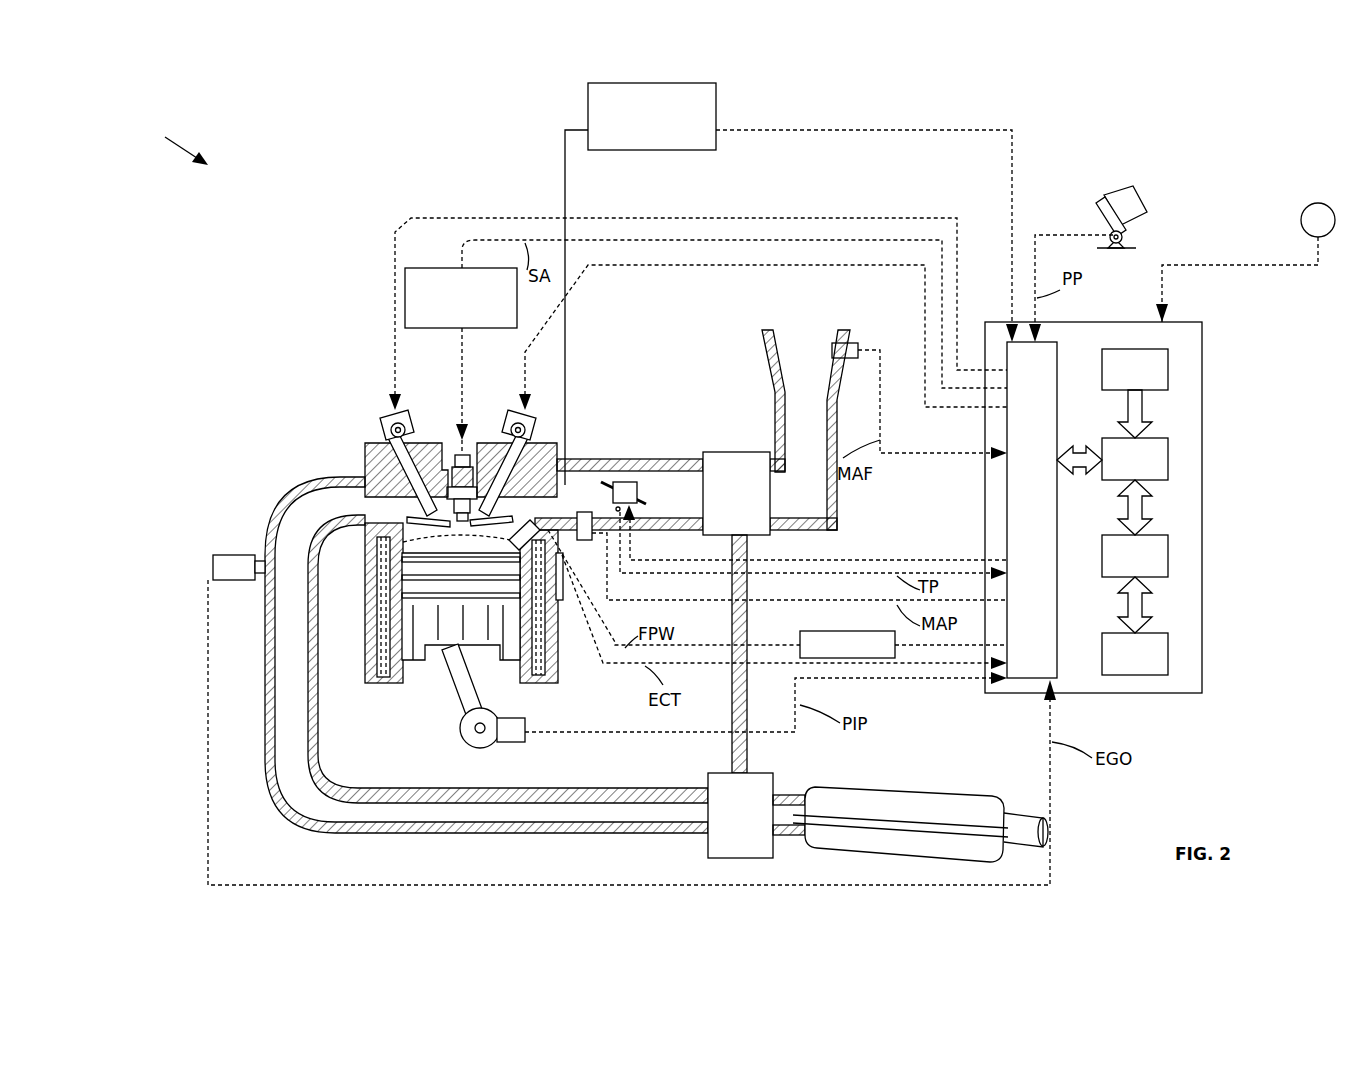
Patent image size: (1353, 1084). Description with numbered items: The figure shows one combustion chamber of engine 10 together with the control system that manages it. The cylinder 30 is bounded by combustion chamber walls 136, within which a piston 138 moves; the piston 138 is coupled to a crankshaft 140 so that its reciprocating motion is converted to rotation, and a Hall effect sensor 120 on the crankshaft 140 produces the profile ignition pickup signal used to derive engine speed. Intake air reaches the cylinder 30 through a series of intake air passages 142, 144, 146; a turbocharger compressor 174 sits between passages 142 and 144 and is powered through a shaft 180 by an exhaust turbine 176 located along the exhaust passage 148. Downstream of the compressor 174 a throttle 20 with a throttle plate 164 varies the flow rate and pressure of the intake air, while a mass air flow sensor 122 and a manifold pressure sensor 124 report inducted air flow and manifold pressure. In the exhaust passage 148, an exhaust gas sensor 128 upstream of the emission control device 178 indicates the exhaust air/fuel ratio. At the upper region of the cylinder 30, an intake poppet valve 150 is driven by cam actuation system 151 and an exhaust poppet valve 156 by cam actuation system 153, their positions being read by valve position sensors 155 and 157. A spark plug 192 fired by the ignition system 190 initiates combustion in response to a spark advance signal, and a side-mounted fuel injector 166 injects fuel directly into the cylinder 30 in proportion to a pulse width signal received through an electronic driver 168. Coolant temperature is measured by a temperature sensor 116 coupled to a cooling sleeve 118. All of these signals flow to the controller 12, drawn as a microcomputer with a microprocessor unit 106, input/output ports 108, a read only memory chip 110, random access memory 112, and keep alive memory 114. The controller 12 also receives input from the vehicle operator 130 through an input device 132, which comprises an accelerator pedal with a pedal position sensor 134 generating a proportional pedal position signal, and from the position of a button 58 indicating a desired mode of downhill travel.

The engine 10 is at (169, 142).
The controller 12 is at (1205, 320).
The throttle 20 is at (718, 95).
The cylinder 30 is at (375, 565).
The button 58 is at (1309, 229).
The microprocessor unit 106 is at (1170, 460).
The input/output ports 108 is at (1060, 358).
The read only memory chip 110 is at (1170, 368).
The random access memory 112 is at (1170, 556).
The keep alive memory 114 is at (1170, 656).
The temperature sensor 116 is at (560, 556).
The cooling sleeve 118 is at (556, 650).
The Hall effect sensor 120 is at (512, 745).
The mass air flow sensor 122 is at (851, 343).
The manifold pressure sensor 124 is at (608, 560).
The exhaust gas sensor 128 is at (213, 560).
The vehicle operator 130 is at (1147, 203).
The input device 132 is at (1099, 212).
The pedal position sensor 134 is at (1137, 238).
The combustion chamber walls 136 is at (405, 668).
The piston 138 is at (447, 637).
The crankshaft 140 is at (475, 750).
The intake air passage 142 is at (823, 373).
The intake air passage 144 is at (691, 503).
The intake air passage 146 is at (593, 503).
The exhaust passage 148 is at (351, 509).
The intake poppet valve 150 is at (490, 470).
The cam actuation system 151 is at (515, 415).
The cam actuation system 153 is at (403, 408).
The valve position sensor 155 is at (542, 432).
The exhaust poppet valve 156 is at (395, 478).
The valve position sensor 157 is at (385, 440).
The throttle plate 164 is at (604, 481).
The fuel injector 166 is at (758, 572).
The electronic driver 168 is at (800, 635).
The compressor 174 is at (728, 452).
The exhaust turbine 176 is at (708, 840).
The emission control device 178 is at (965, 795).
The shaft 180 is at (748, 748).
The ignition system 190 is at (420, 268).
The spark plug 192 is at (455, 458).